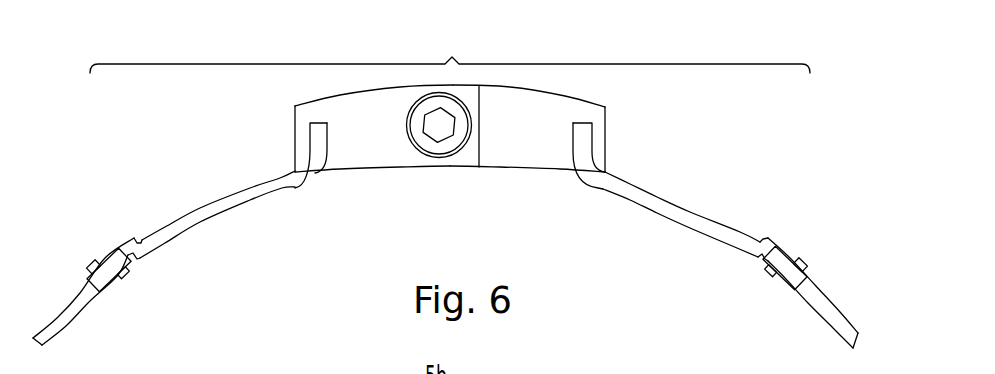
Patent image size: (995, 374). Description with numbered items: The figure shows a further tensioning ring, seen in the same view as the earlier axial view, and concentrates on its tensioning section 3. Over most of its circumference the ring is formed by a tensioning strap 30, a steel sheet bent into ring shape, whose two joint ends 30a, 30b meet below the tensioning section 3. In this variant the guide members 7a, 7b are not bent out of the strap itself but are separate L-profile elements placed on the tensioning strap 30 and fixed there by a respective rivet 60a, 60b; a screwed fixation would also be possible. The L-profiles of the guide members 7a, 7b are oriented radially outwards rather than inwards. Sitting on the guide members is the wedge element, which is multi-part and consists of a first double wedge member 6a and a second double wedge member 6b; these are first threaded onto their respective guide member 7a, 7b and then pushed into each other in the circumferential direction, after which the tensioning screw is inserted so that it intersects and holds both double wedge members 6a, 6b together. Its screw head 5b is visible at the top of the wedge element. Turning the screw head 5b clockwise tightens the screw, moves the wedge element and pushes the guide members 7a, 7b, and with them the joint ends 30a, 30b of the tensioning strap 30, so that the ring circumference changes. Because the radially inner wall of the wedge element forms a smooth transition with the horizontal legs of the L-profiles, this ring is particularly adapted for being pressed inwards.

The tensioning section 3 is at (450, 43).
The screw head 5b is at (440, 128).
The first double wedge member 6a is at (373, 137).
The second double wedge member 6b is at (527, 128).
The guide member 7a is at (315, 152).
The guide member 7b is at (583, 152).
The tensioning strap 30 is at (57, 325).
The joint end of the tensioning strap 30a is at (143, 261).
The joint end of the tensioning strap 30b is at (762, 241).
The rivet 60a is at (122, 282).
The rivet 60b is at (778, 282).